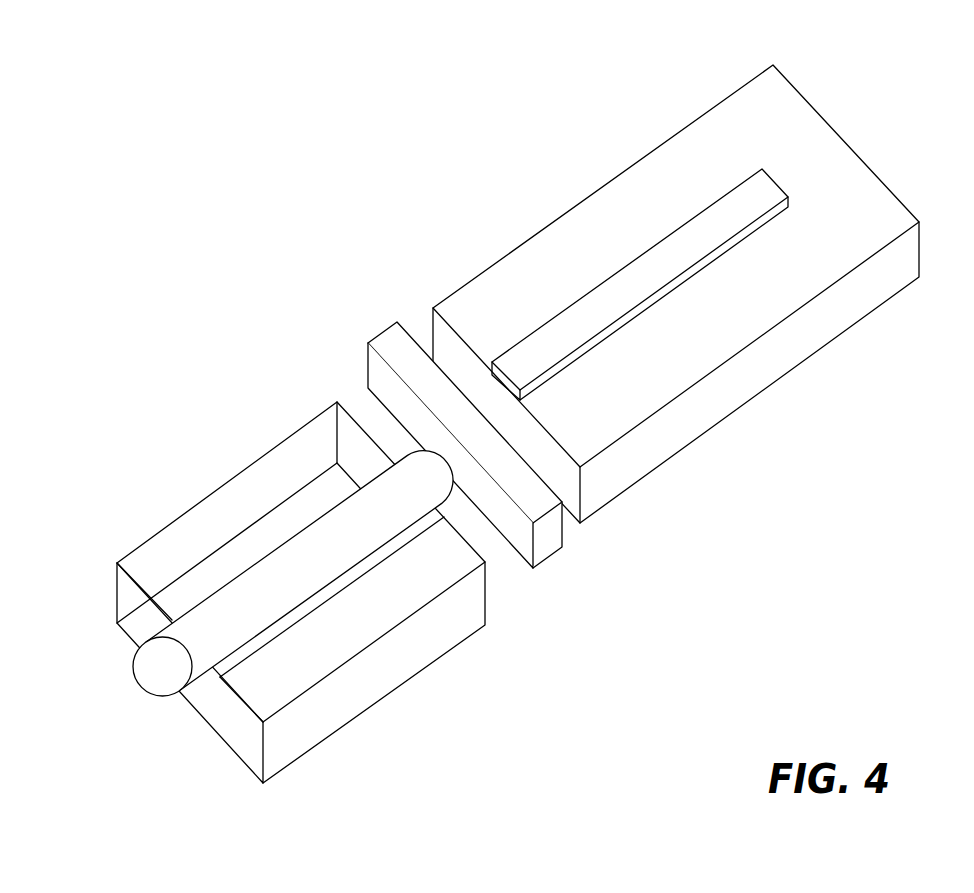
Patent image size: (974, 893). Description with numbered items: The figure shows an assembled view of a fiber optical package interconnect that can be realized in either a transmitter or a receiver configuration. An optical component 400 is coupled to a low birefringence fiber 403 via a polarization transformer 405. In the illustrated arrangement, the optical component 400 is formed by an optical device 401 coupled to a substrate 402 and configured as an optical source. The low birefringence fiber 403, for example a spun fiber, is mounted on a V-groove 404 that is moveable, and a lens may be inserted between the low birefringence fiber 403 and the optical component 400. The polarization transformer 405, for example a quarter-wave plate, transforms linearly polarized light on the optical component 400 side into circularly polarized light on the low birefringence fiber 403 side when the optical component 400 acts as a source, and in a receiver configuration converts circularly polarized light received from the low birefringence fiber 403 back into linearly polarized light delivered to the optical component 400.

The optical component 400 is at (507, 405).
The optical device 401 is at (635, 277).
The substrate 402 is at (845, 213).
The low birefringence fiber 403 is at (158, 675).
The V-groove 404 is at (273, 468).
The polarization transformer 405 is at (380, 337).